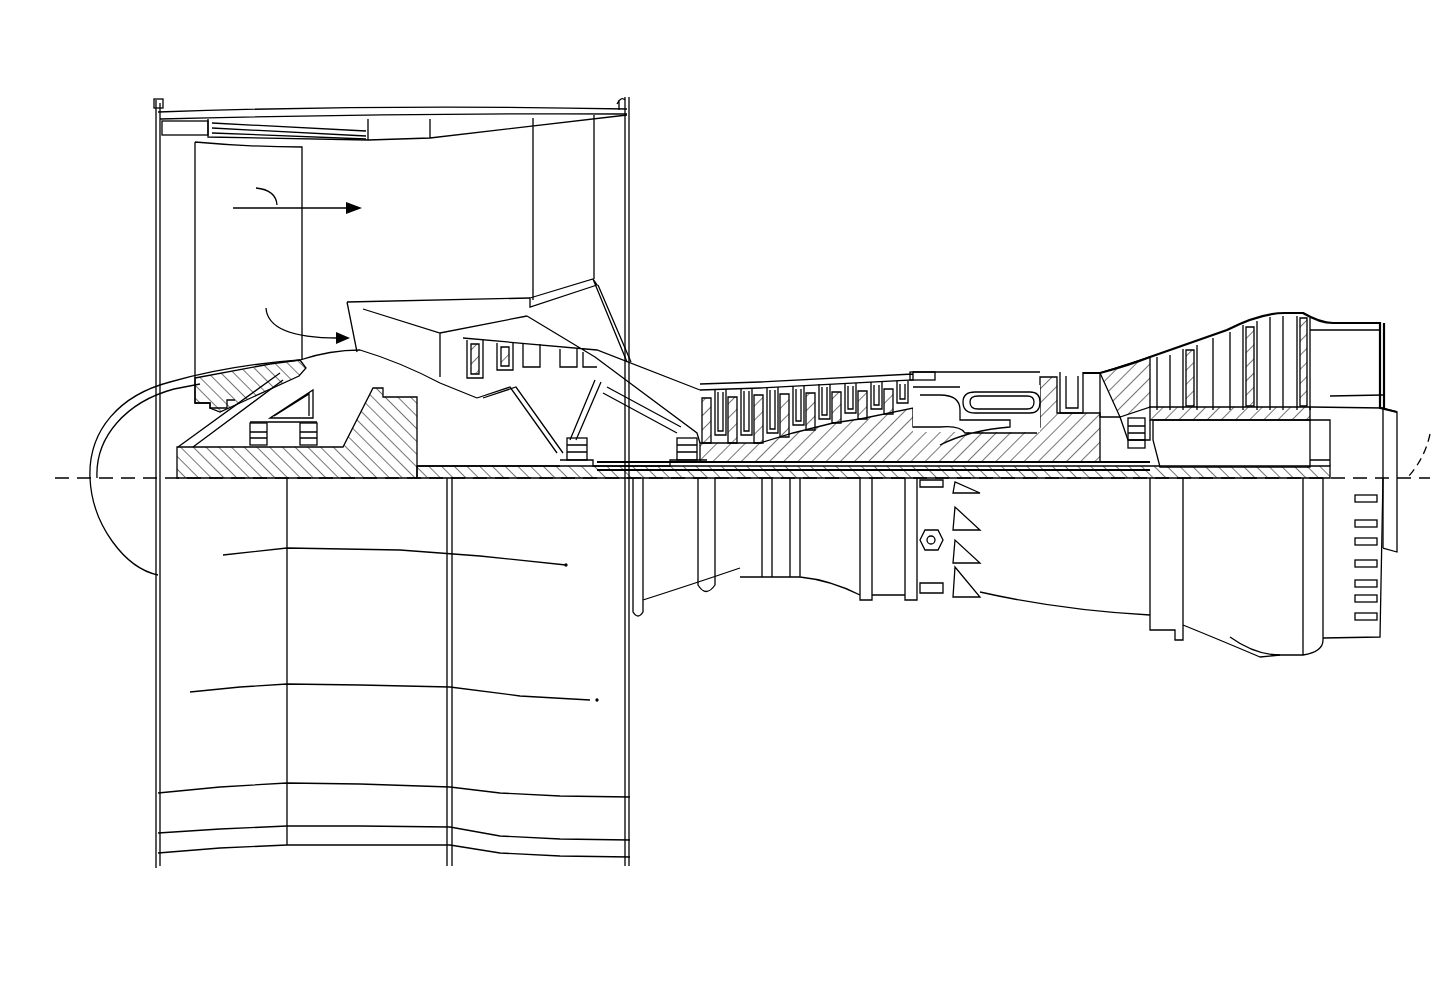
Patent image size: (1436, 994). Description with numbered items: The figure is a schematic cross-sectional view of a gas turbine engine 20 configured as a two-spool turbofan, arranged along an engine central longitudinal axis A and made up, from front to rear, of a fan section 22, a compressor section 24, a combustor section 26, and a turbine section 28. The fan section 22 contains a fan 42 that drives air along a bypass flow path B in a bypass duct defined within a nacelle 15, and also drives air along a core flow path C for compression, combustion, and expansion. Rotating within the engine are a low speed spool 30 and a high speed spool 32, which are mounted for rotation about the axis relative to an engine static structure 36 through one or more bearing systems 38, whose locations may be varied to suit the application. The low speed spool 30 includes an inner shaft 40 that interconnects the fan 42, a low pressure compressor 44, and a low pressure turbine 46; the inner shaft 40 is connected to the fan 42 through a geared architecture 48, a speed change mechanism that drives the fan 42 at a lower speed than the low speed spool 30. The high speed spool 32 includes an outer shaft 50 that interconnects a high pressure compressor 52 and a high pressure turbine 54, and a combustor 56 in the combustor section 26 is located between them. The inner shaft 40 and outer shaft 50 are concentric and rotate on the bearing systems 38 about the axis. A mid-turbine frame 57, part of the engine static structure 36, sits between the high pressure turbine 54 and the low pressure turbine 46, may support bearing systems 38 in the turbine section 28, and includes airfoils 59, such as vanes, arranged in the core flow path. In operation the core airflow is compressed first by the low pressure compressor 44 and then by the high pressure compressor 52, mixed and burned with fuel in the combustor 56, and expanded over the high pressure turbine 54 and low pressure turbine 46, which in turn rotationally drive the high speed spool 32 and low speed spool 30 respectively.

The nacelle 15 is at (398, 128).
The gas turbine engine 20 is at (1206, 148).
The fan section 22 is at (268, 98).
The compressor section 24 is at (730, 346).
The combustor section 26 is at (985, 328).
The turbine section 28 is at (1184, 286).
The low speed spool 30 is at (850, 490).
The high speed spool 32 is at (902, 430).
The engine static structure 36 is at (887, 605).
The bearing systems 38 is at (580, 463).
The inner shaft 40 is at (647, 474).
The fan 42 is at (275, 259).
The low pressure compressor 44 is at (547, 353).
The low pressure turbine 46 is at (1238, 337).
The geared architecture 48 is at (398, 446).
The outer shaft 50 is at (1013, 455).
The high pressure compressor 52 is at (810, 447).
The high pressure turbine 54 is at (1068, 372).
The combustor 56 is at (993, 397).
The mid-turbine frame 57 is at (1126, 366).
The airfoils 59 is at (1118, 381).